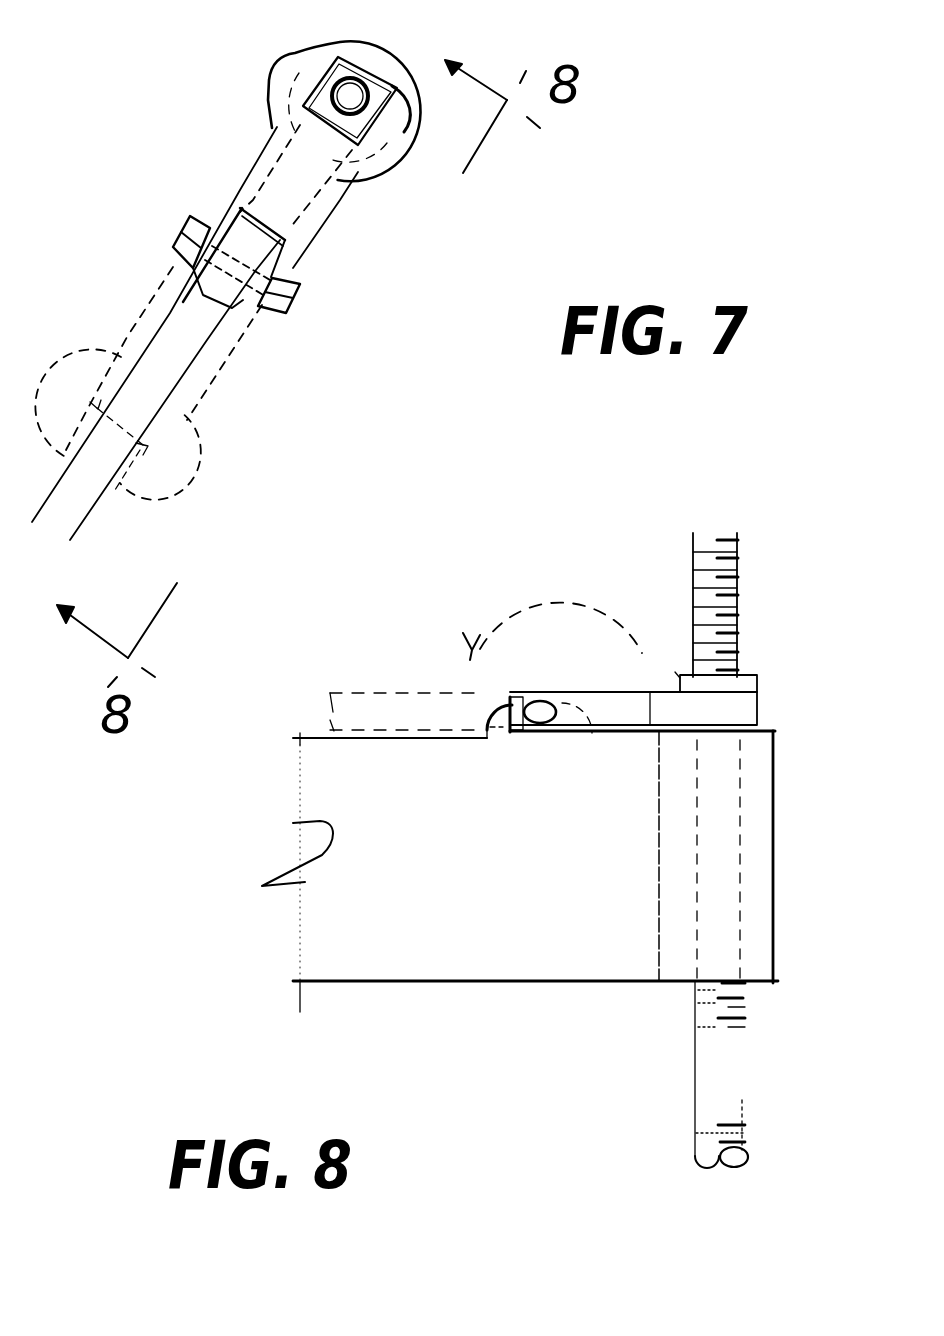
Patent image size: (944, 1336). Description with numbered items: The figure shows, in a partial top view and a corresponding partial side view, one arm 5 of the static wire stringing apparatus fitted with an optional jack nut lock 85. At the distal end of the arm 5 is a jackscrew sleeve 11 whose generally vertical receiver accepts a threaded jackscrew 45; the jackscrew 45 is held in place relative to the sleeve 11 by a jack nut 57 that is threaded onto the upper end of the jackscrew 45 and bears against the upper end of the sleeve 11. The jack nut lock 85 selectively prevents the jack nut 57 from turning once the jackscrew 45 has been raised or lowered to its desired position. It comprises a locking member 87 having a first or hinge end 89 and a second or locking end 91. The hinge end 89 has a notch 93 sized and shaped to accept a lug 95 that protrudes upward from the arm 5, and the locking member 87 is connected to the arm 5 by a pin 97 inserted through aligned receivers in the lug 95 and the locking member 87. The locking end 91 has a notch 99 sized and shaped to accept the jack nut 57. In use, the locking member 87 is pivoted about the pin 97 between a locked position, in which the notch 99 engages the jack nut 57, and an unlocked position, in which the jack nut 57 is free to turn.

In FIG. 7, the arm 5 is at (88, 512).
In FIG. 8, the arm 5 is at (468, 983).
In FIG. 7, the jackscrew sleeve 11 is at (355, 40).
In FIG. 8, the jackscrew sleeve 11 is at (778, 903).
In FIG. 7, the jackscrew 45 is at (368, 78).
In FIG. 8, the jackscrew 45 is at (737, 584).
In FIG. 7, the jack nut 57 is at (362, 53).
In FIG. 8, the jack nut 57 is at (755, 668).
In FIG. 7, the jack nut lock 85 is at (208, 129).
In FIG. 8, the jack nut lock 85 is at (583, 647).
In FIG. 7, the locking member 87 is at (330, 218).
In FIG. 8, the locking member 87 is at (630, 733).
In FIG. 7, the hinge end 89 is at (283, 324).
In FIG. 7, the locking end 91 is at (418, 118).
In FIG. 7, the notch 93 is at (268, 250).
In FIG. 7, the lug 95 is at (182, 304).
In FIG. 8, the lug 95 is at (503, 706).
In FIG. 7, the pin 97 is at (297, 292).
In FIG. 8, the pin 97 is at (517, 732).
In FIG. 7, the notch 99 is at (318, 82).